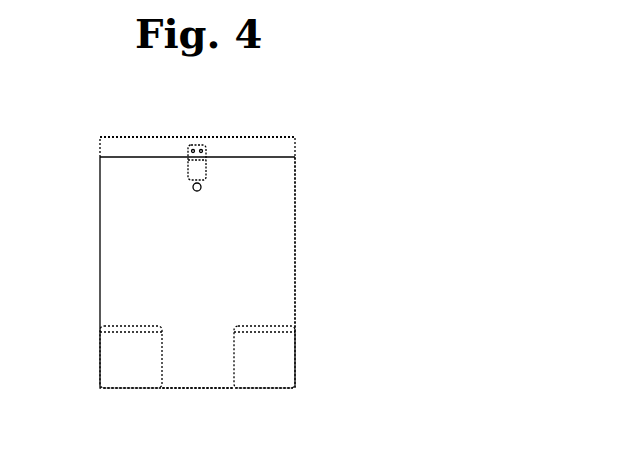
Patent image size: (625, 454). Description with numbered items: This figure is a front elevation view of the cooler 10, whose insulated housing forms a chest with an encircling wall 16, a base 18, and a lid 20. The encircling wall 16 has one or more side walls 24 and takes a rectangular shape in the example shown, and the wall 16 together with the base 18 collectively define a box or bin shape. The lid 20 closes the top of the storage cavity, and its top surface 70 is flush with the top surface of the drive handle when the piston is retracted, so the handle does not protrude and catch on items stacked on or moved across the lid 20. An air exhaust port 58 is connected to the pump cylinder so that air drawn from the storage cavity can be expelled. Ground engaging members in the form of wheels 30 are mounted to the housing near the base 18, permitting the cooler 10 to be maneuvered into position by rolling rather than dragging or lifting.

The cooler 10 is at (318, 84).
The encircling wall 16 is at (197, 262).
The base 18 is at (200, 388).
The lid 20 is at (151, 150).
The side walls 24 is at (100, 215).
The wheels 30 is at (135, 388).
The air exhaust port 58 is at (201, 184).
The top surface of the lid 70 is at (115, 137).